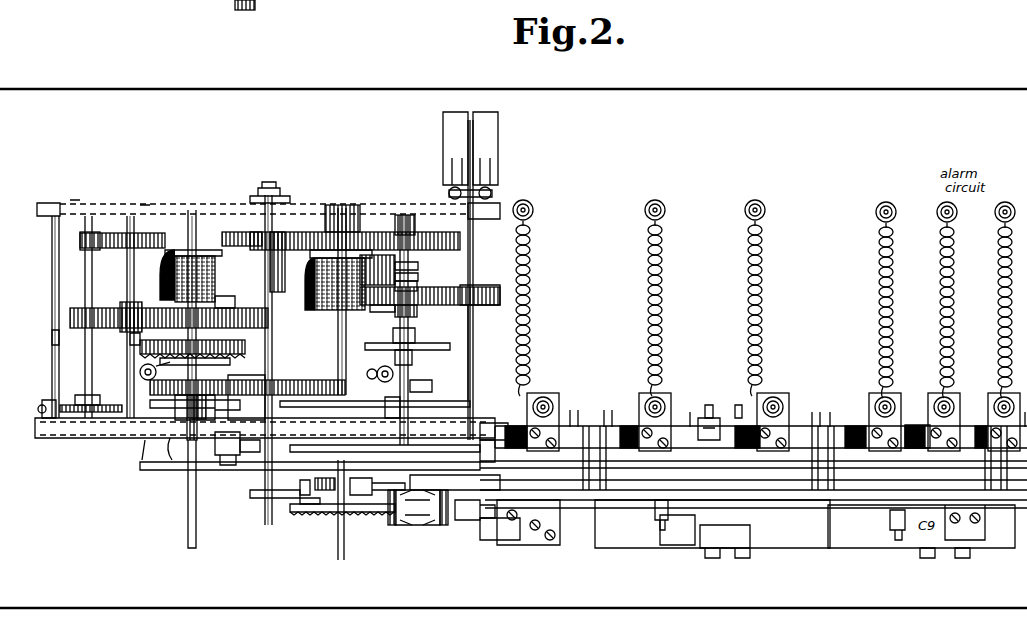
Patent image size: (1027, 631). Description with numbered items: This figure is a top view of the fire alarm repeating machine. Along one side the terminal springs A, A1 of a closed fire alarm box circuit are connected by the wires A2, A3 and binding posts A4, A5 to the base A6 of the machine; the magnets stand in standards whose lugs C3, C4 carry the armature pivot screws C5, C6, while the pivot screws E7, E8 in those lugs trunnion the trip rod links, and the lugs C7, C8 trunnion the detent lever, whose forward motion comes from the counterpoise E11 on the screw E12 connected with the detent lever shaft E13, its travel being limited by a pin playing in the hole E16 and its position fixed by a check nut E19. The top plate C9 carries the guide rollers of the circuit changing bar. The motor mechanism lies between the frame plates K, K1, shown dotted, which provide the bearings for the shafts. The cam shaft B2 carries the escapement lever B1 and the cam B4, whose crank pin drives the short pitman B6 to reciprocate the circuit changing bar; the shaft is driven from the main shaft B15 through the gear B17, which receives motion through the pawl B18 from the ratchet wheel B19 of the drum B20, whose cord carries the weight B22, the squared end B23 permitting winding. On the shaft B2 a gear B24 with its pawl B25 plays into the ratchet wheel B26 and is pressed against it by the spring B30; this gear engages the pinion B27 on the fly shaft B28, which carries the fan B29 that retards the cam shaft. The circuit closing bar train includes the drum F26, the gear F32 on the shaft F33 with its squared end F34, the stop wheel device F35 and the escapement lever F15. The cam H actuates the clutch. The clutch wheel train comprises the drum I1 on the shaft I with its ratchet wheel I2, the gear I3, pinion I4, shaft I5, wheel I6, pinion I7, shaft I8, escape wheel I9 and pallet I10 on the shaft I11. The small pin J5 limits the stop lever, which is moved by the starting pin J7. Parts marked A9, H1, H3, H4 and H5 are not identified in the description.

The terminal spring A is at (565, 420).
The terminal spring A1 is at (608, 425).
The wire A2 is at (530, 333).
The wire A3 is at (648, 326).
The binding post A4 is at (534, 210).
The binding post A5 is at (644, 210).
The base A6 is at (425, 349).
The electromagnet block A9 is at (927, 439).
The escapement lever B1 is at (385, 444).
The shaft B2 is at (418, 378).
The cam B4 is at (377, 486).
The short pitman B6 is at (450, 468).
The main shaft B15 is at (290, 328).
The gear B17 is at (378, 226).
The pawl B18 is at (415, 230).
The ratchet wheel B19 is at (320, 232).
The drum B20 is at (377, 270).
The weight B22 is at (486, 285).
The squared end of shaft B23 is at (336, 562).
The gear B24 is at (421, 280).
The pawl B25 is at (382, 313).
The ratchet wheel B26 is at (417, 313).
The pinion B27 is at (434, 292).
The shaft B28 is at (474, 320).
The fan mechanism B29 is at (475, 150).
The spring B30 is at (418, 268).
The lug C3 is at (720, 548).
The lug C4 is at (712, 404).
The armature pivot screw C5 is at (695, 550).
The armature pivot screw C6 is at (700, 415).
The lug C7 is at (470, 520).
The lug C8 is at (494, 420).
The top plate C9 is at (528, 522).
The pivot screw E7 is at (748, 553).
The pivot screw E8 is at (742, 404).
The counterpoise E11 is at (415, 525).
The screw E12 is at (333, 515).
The detent lever shaft E13 is at (485, 540).
The hole E16 is at (385, 515).
The check nut E19 is at (449, 511).
The escapement lever F15 is at (315, 485).
The drum F26 is at (192, 358).
The gear F32 is at (310, 380).
The shaft F33 is at (327, 280).
The squared end of shaft F34 is at (290, 508).
The stop wheel device F35 is at (280, 212).
The cam H is at (445, 343).
The arm H1 is at (412, 355).
The rod H3 is at (378, 410).
The roller H4 is at (150, 382).
The roller H5 is at (380, 382).
The shaft I is at (185, 528).
The drum I1 is at (217, 258).
The ratchet wheel I2 is at (238, 288).
The gear I3 is at (140, 310).
The pinion I4 is at (122, 306).
The shaft I5 is at (128, 340).
The wheel I6 is at (142, 250).
The pinion I7 is at (80, 242).
The shaft I8 is at (92, 405).
The escape wheel I9 is at (78, 395).
The pallet I10 is at (42, 404).
The shaft I11 is at (62, 335).
The small pin J5 is at (145, 456).
The starting pin J7 is at (168, 455).
The front frame plate K is at (108, 436).
The frame plate K1 is at (105, 212).